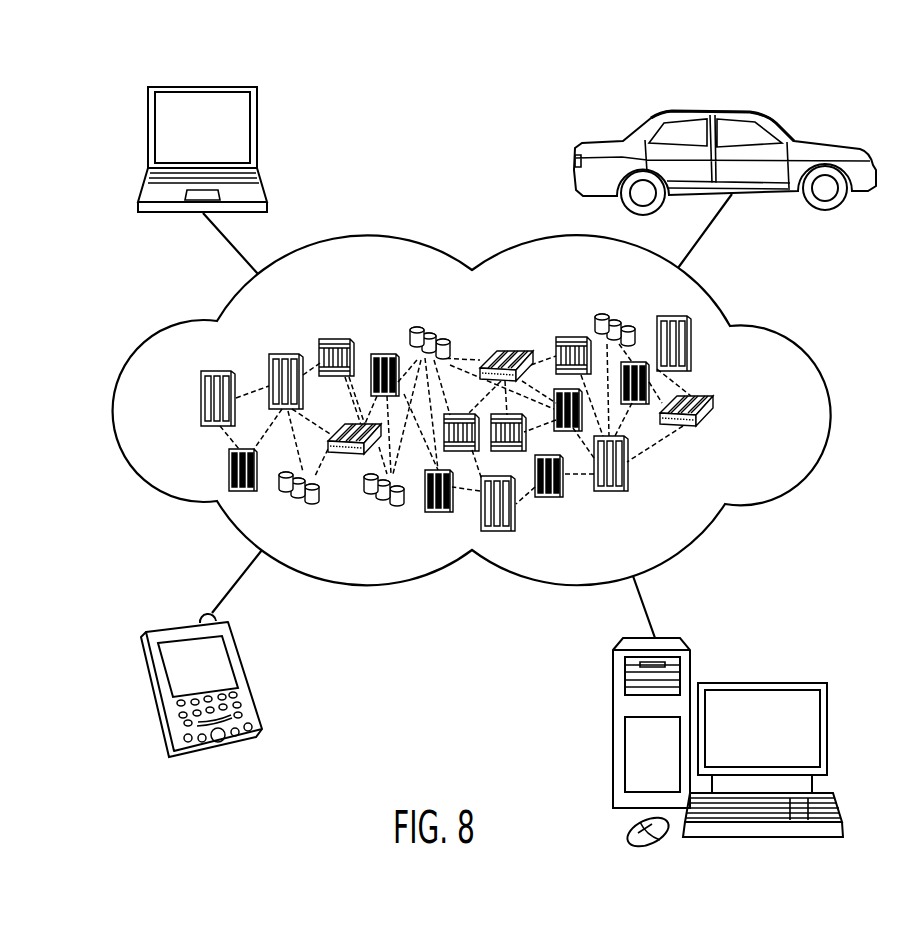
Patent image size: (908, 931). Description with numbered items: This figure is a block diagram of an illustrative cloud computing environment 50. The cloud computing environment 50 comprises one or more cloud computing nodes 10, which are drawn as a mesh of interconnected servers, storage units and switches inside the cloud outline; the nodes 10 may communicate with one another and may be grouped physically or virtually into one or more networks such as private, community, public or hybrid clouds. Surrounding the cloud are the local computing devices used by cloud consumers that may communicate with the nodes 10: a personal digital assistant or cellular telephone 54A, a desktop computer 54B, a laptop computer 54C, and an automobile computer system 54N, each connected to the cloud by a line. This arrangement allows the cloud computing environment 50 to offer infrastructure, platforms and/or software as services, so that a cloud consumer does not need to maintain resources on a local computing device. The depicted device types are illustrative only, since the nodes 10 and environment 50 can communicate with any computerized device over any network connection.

The cloud computing node 10 is at (716, 408).
The cloud computing environment 50 is at (773, 326).
The personal digital assistant or cellular telephone 54A is at (183, 623).
The desktop computer 54B is at (762, 680).
The laptop computer 54C is at (202, 85).
The automobile computer system 54N is at (705, 110).